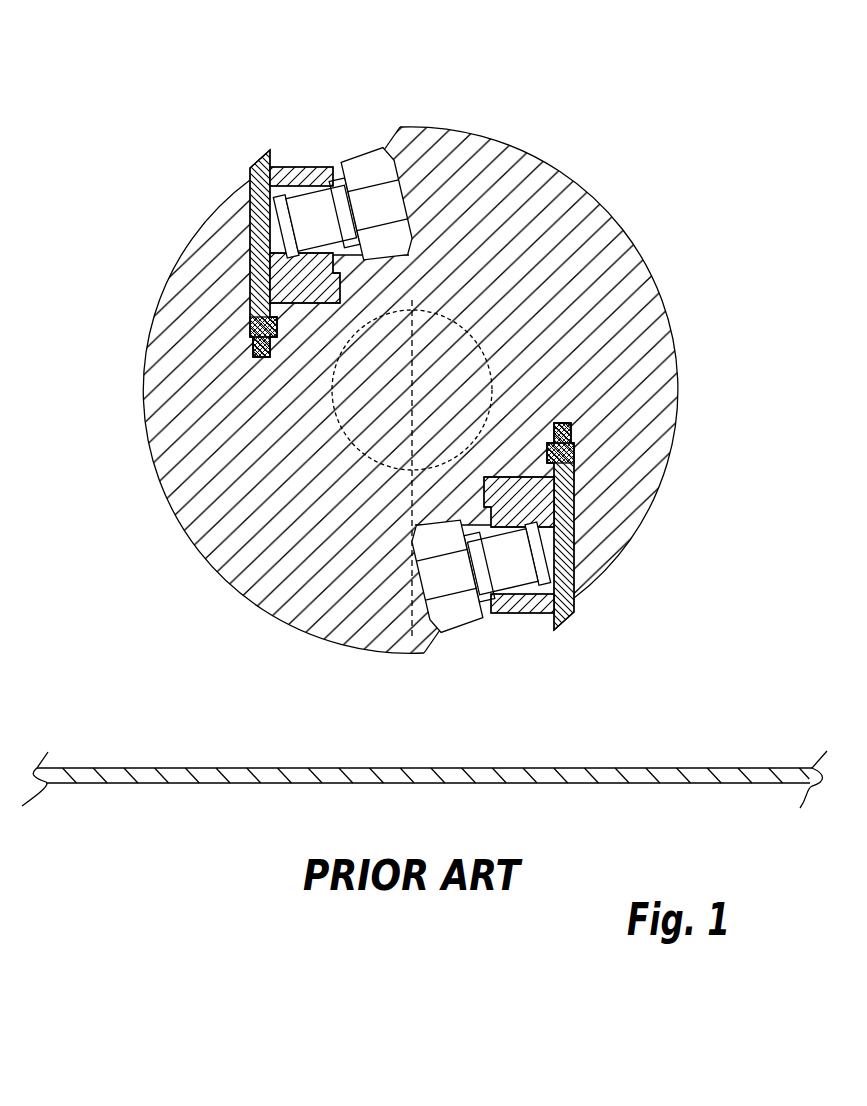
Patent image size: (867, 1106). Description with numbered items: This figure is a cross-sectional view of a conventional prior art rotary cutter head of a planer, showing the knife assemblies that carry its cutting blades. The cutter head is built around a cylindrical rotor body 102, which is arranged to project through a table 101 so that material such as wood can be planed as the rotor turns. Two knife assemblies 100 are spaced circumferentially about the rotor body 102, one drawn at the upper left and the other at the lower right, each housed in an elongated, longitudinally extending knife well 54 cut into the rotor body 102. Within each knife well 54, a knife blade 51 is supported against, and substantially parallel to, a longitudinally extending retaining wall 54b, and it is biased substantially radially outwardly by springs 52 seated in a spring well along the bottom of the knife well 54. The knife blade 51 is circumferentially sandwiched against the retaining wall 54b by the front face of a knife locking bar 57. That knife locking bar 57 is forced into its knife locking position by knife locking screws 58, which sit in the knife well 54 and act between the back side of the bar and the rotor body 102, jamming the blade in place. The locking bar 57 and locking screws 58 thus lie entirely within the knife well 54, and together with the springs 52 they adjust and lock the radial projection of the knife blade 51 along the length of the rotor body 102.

The knife blade 51 is at (270, 152).
The springs 52 is at (605, 426).
The knife well 54 is at (448, 150).
The retaining wall 54b is at (250, 244).
The knife locking bar 57 is at (302, 167).
The knife locking screws 58 is at (364, 155).
The knife assembly 100 is at (329, 133).
The table 101 is at (662, 777).
The rotor body 102 is at (644, 291).